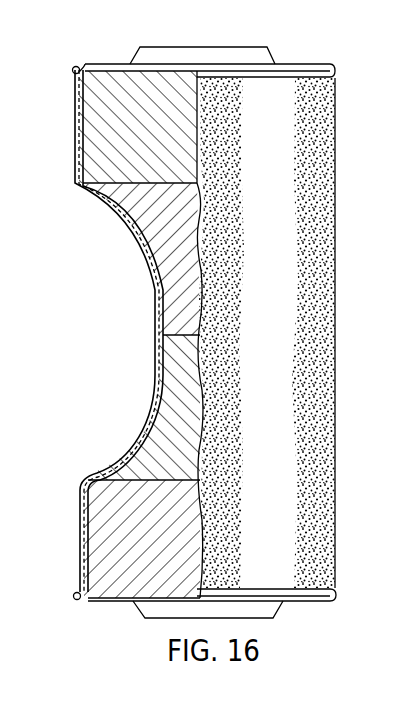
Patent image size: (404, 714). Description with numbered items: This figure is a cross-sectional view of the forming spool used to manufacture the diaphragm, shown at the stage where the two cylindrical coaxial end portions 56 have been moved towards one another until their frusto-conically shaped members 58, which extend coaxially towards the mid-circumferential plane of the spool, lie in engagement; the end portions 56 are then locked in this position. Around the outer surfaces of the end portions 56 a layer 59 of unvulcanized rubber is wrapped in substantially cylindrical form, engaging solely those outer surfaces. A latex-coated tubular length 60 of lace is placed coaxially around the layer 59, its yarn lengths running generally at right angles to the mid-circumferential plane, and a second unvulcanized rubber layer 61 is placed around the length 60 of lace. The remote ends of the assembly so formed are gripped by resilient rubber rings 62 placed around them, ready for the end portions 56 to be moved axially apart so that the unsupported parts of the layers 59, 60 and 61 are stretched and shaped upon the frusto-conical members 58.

The end portion 56 is at (98, 106).
The frusto-conically shaped member 58 is at (130, 208).
The layer of unvulcanized rubber 59 is at (153, 291).
The tubular length of lace 60 is at (156, 325).
The second unvulcanized rubber layer 61 is at (153, 360).
The resilient rubber ring 62 is at (77, 67).